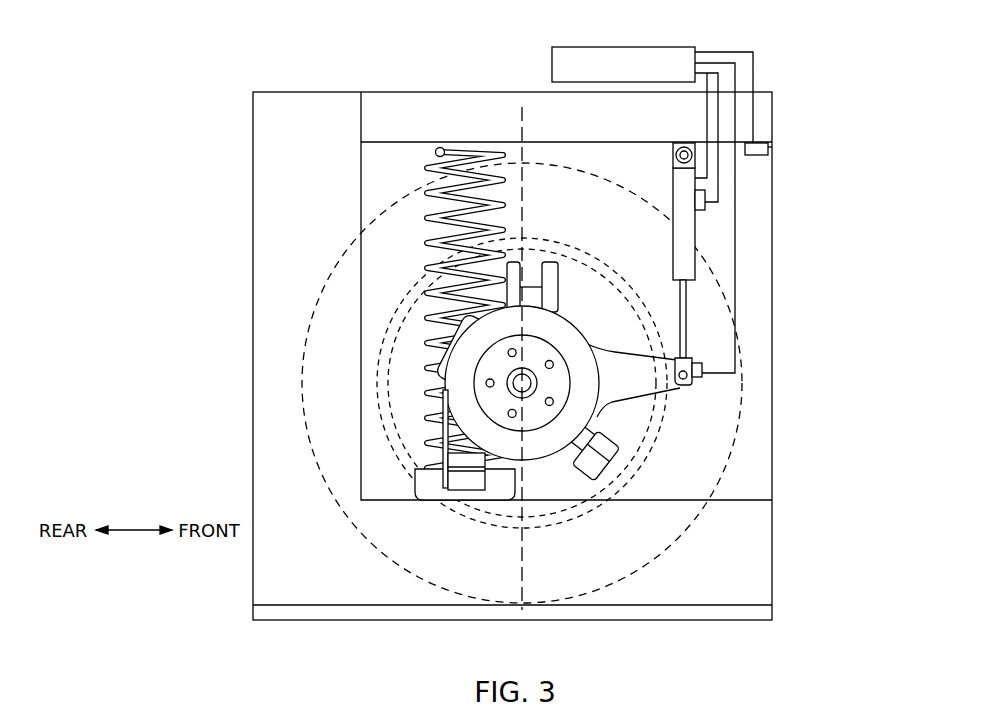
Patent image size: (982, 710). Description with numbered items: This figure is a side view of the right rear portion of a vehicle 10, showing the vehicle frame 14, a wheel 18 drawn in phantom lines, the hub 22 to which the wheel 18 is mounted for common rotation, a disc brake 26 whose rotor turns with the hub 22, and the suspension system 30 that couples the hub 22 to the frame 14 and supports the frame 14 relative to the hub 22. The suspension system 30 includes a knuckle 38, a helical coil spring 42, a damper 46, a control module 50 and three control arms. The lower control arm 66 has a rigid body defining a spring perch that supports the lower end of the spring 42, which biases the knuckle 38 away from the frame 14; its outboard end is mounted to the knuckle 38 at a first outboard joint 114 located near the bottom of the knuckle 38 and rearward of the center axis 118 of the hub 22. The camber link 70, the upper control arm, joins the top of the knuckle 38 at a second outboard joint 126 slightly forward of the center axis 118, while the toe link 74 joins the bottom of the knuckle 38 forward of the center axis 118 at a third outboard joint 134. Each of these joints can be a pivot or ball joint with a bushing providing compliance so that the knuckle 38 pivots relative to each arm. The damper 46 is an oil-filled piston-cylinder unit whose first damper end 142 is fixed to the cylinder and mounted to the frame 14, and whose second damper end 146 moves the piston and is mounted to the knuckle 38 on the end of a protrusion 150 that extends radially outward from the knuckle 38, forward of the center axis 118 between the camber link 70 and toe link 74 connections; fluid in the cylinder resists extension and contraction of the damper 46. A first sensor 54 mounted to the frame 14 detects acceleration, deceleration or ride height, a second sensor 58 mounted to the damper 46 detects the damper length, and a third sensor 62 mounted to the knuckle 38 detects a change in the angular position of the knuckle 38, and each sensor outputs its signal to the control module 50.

The vehicle 10 is at (473, 327).
The vehicle frame 14 is at (378, 105).
The wheel 18 is at (302, 368).
The hub 22 is at (533, 422).
The brake 26 is at (462, 357).
The suspension system 30 is at (355, 196).
The knuckle 38 is at (457, 442).
The spring 42 is at (457, 148).
The damper 46 is at (707, 268).
The control module 50 is at (620, 43).
The first sensor 54 is at (772, 147).
The second sensor 58 is at (707, 203).
The third sensor 62 is at (703, 370).
The lower control arm 66 is at (420, 488).
The camber link 70 is at (375, 176).
The toe link 74 is at (612, 468).
The first outboard joint 114 is at (458, 480).
The center axis 118 is at (528, 603).
The second outboard joint 126 is at (530, 277).
The third outboard joint 134 is at (603, 457).
The first damper end 142 is at (697, 147).
The second damper end 146 is at (676, 358).
The protrusion 150 is at (638, 378).